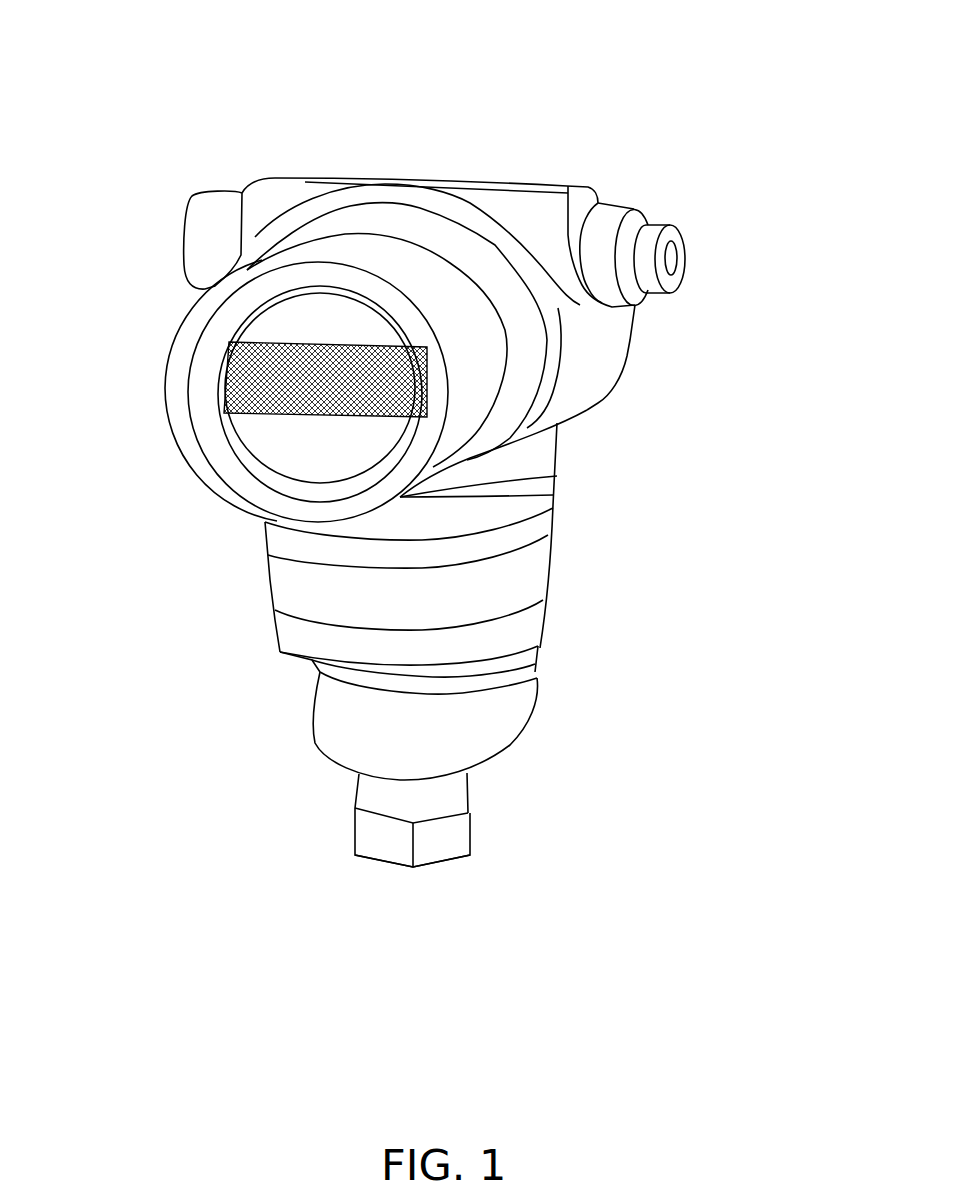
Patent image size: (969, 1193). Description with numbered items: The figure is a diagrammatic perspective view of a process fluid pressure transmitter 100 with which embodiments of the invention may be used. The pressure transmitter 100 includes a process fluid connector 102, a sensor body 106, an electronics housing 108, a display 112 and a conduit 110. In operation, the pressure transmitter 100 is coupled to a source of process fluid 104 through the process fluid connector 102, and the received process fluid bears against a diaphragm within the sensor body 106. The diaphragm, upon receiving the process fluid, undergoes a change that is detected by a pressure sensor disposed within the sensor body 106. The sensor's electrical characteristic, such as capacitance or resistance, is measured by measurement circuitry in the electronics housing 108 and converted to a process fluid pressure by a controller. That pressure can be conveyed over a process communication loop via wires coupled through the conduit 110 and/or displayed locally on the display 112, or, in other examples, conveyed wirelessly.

The pressure transmitter 100 is at (722, 86).
The process fluid connector 102 is at (470, 832).
The source of process fluid 104 is at (427, 892).
The sensor body 106 is at (560, 581).
The electronics housing 108 is at (628, 357).
The conduit 110 is at (185, 240).
The display 112 is at (340, 395).